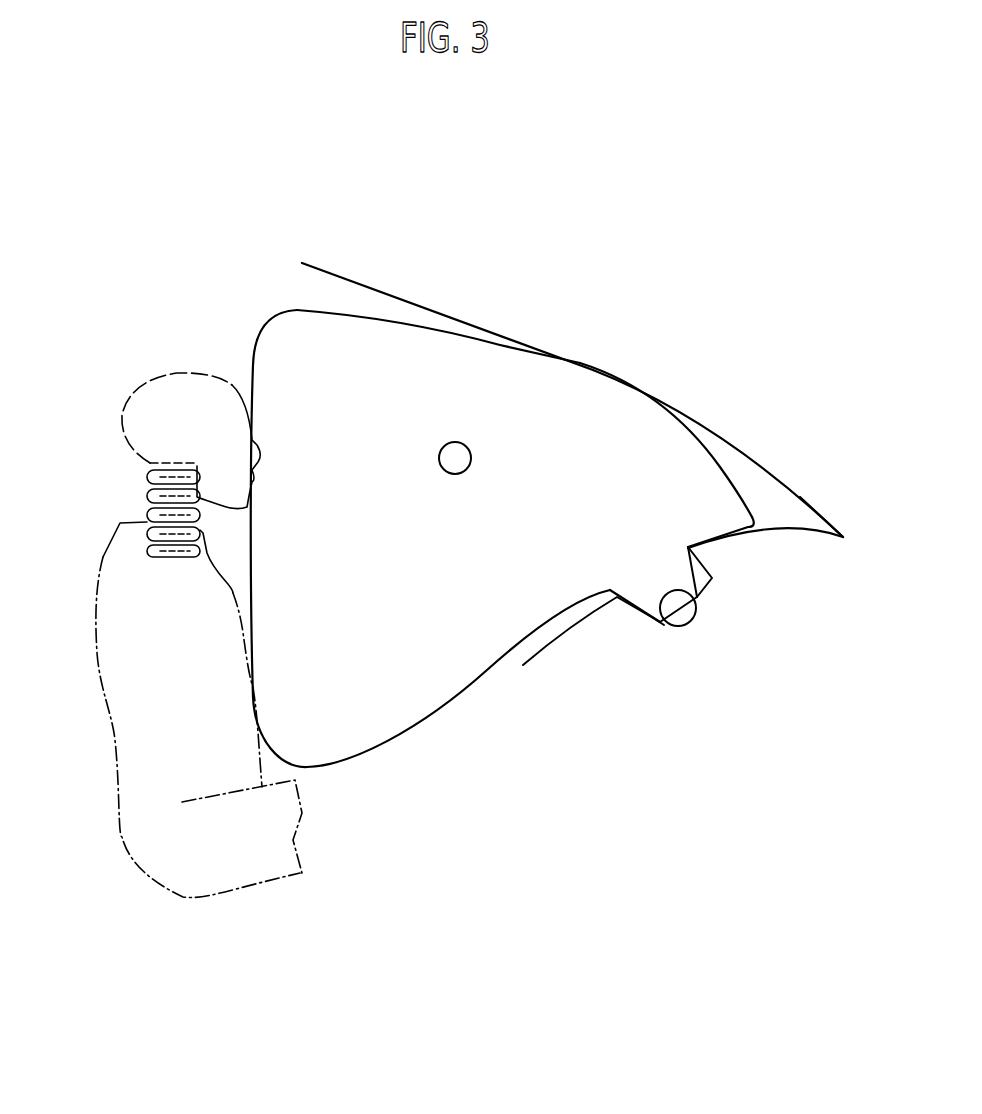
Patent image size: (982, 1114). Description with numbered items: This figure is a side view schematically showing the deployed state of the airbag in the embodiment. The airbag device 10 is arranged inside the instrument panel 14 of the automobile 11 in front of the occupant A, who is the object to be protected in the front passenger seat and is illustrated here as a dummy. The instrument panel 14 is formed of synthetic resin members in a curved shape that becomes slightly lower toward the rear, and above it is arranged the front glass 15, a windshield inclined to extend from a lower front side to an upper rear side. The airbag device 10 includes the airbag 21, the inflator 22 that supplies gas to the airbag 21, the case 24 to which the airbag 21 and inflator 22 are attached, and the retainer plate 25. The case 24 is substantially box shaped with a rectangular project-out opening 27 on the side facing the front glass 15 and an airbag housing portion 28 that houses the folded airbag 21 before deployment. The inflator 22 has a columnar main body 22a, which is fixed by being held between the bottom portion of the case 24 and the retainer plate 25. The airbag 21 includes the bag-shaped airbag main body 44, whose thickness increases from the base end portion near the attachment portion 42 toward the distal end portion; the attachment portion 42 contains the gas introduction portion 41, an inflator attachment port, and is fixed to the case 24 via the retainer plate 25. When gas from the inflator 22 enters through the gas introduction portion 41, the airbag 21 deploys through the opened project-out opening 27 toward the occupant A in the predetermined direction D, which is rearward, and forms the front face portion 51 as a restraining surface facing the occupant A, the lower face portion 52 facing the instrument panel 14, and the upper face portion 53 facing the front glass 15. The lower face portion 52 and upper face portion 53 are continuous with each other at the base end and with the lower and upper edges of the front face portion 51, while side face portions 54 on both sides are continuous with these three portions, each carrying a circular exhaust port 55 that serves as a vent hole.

The airbag device 10 is at (483, 499).
The automobile 11 is at (827, 520).
The instrument panel 14 is at (787, 525).
The front glass 15 is at (350, 279).
The airbag 21 is at (563, 357).
The inflator 22 is at (688, 628).
The main body 22a is at (698, 615).
The case 24 is at (702, 595).
The retainer plate 25 is at (632, 613).
The project-out opening 27 is at (678, 550).
The airbag housing portion 28 is at (647, 625).
The gas introduction portion 41 is at (660, 622).
The attachment portion 42 is at (703, 567).
The airbag main body 44 is at (703, 440).
The front face portion 51 is at (248, 371).
The lower face portion 52 is at (445, 717).
The upper face portion 53 is at (460, 333).
The side face portion 54 is at (530, 364).
The exhaust port 55 is at (470, 453).
The occupant A is at (102, 558).
The predetermined direction D is at (613, 513).